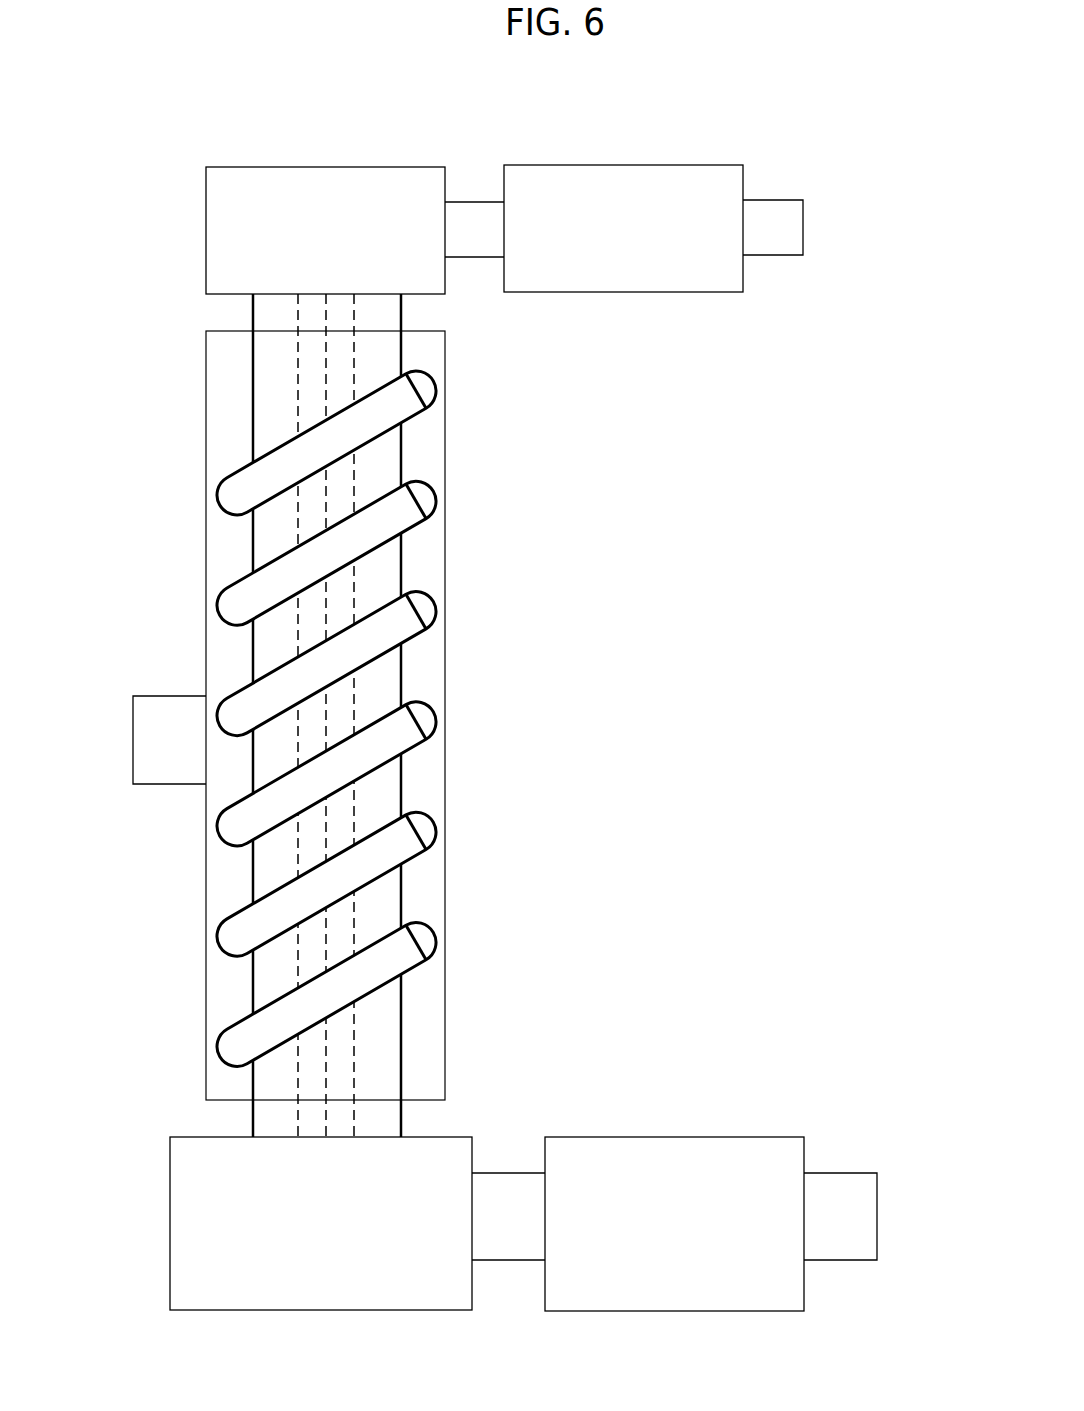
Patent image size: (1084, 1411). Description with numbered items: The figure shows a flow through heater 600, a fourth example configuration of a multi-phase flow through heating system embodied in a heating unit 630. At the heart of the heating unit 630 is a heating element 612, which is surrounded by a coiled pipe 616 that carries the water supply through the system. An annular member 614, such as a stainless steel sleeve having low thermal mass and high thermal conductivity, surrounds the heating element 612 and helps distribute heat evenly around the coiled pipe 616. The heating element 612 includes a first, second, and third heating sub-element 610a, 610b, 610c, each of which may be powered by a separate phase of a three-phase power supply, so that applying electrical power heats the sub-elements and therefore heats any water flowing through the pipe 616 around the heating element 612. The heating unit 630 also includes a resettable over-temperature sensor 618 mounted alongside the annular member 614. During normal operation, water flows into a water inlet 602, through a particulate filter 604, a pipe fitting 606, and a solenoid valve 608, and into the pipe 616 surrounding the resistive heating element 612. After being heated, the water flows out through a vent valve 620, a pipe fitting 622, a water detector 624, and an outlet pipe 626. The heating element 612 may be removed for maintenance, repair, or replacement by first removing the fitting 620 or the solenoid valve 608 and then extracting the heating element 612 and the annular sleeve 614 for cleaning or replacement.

The flow through heater 600 is at (100, 116).
The water inlet 602 is at (877, 1200).
The particulate filter 604 is at (692, 1184).
The pipe fitting 606 is at (527, 1212).
The solenoid valve 608 is at (343, 1203).
The first heating sub-element 610a is at (298, 1040).
The second heating sub-element 610b is at (326, 1072).
The third heating sub-element 610c is at (354, 1100).
The heating element 612 is at (206, 422).
The annular member 614 is at (253, 357).
The coiled pipe 616 is at (218, 488).
The resettable over-temperature sensor 618 is at (187, 746).
The vent valve 620 is at (343, 214).
The pipe fitting 622 is at (490, 242).
The water detector 624 is at (642, 214).
The outlet pipe 626 is at (803, 211).
The heating unit 630 is at (466, 462).